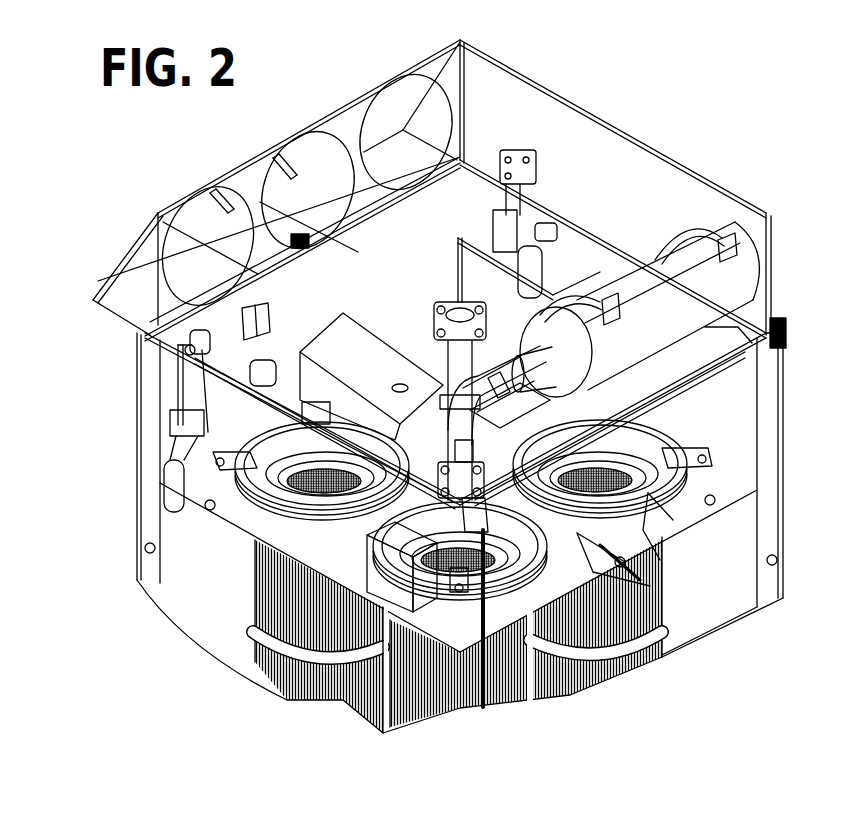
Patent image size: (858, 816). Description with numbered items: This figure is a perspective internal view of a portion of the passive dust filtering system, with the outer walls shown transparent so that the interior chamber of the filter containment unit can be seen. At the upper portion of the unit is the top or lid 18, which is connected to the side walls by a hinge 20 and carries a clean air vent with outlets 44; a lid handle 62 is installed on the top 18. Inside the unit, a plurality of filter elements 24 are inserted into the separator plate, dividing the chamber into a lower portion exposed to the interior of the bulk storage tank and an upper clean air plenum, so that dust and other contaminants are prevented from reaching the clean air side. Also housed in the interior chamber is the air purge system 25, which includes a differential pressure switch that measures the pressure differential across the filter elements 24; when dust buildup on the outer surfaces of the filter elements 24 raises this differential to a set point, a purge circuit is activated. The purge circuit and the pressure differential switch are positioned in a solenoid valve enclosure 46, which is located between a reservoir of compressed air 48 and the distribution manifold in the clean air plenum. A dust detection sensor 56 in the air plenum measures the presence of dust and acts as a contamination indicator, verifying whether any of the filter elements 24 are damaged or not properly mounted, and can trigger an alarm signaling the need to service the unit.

The top or lid 18 is at (425, 232).
The hinge 20 is at (780, 332).
The filter elements 24 is at (250, 492).
The air purge system 25 is at (598, 215).
The outlets 44 is at (187, 270).
The solenoid valve enclosure 46 is at (345, 355).
The reservoir of compressed air 48 is at (722, 278).
The dust detection sensor 56 is at (258, 303).
The lid handle 62 is at (234, 162).